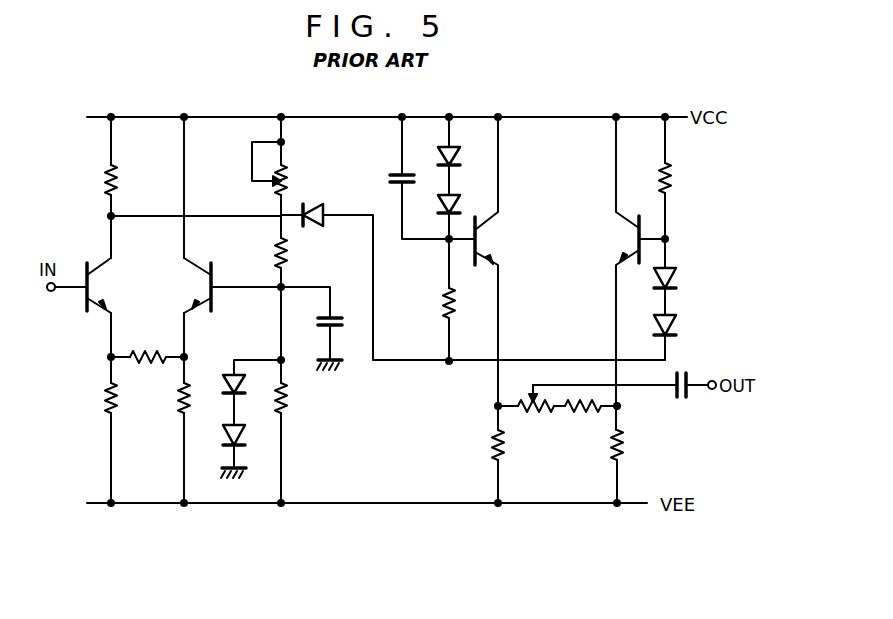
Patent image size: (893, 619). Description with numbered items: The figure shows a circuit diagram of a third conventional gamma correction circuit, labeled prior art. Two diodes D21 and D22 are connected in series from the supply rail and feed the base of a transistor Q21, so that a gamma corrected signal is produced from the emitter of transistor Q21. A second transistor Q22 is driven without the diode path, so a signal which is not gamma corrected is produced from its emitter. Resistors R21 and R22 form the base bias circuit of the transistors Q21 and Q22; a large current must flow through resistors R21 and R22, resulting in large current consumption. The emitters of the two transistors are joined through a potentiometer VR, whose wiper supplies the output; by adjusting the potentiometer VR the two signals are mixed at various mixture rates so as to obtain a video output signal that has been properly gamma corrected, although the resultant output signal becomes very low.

The diode D21 is at (453, 156).
The diode D22 is at (453, 204).
The transistor Q21 is at (482, 240).
The transistor Q22 is at (634, 238).
The resistor R21 is at (447, 306).
The resistor R22 is at (669, 173).
The potentiometer VR is at (542, 411).